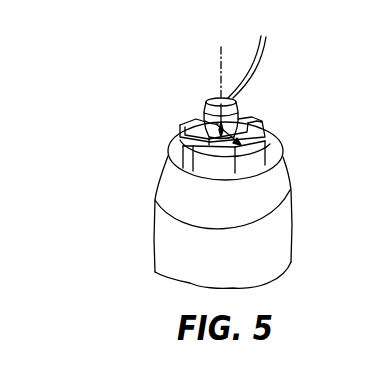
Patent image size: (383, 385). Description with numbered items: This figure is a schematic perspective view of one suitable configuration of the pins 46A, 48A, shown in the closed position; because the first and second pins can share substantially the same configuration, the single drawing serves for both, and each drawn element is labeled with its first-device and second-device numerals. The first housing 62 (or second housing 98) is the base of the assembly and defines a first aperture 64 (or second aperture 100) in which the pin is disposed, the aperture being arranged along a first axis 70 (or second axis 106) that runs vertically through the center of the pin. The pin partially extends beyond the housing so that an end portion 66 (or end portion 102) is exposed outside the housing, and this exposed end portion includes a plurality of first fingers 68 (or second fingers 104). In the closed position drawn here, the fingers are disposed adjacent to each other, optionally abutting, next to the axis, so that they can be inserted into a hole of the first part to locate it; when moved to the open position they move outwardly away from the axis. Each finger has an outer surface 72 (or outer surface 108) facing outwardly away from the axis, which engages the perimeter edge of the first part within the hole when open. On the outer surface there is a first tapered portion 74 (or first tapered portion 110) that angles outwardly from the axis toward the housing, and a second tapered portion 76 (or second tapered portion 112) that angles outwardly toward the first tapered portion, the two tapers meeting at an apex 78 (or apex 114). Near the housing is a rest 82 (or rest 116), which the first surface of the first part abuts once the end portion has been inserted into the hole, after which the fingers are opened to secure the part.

The first pin 46A is at (198, 151).
The second pin 48A is at (155, 73).
The first housing 62 is at (183, 222).
The second housing 98 is at (167, 240).
The first aperture 64 is at (297, 131).
The second aperture 100 is at (250, 129).
The end portion 66 is at (273, 99).
The end portion 102 is at (245, 102).
The first fingers 68 is at (200, 59).
The second fingers 104 is at (218, 100).
The first axis 70 is at (178, 59).
The second axis 106 is at (220, 73).
The outer surface 72 is at (260, 153).
The outer surface 108 is at (276, 168).
The first tapered portion 74 is at (273, 104).
The first tapered portion 110 is at (231, 117).
The second tapered portion 76 is at (182, 154).
The second tapered portion 112 is at (168, 151).
The apex 78 is at (221, 170).
The apex 114 is at (237, 146).
The rest 82 is at (181, 125).
The rest 116 is at (195, 125).